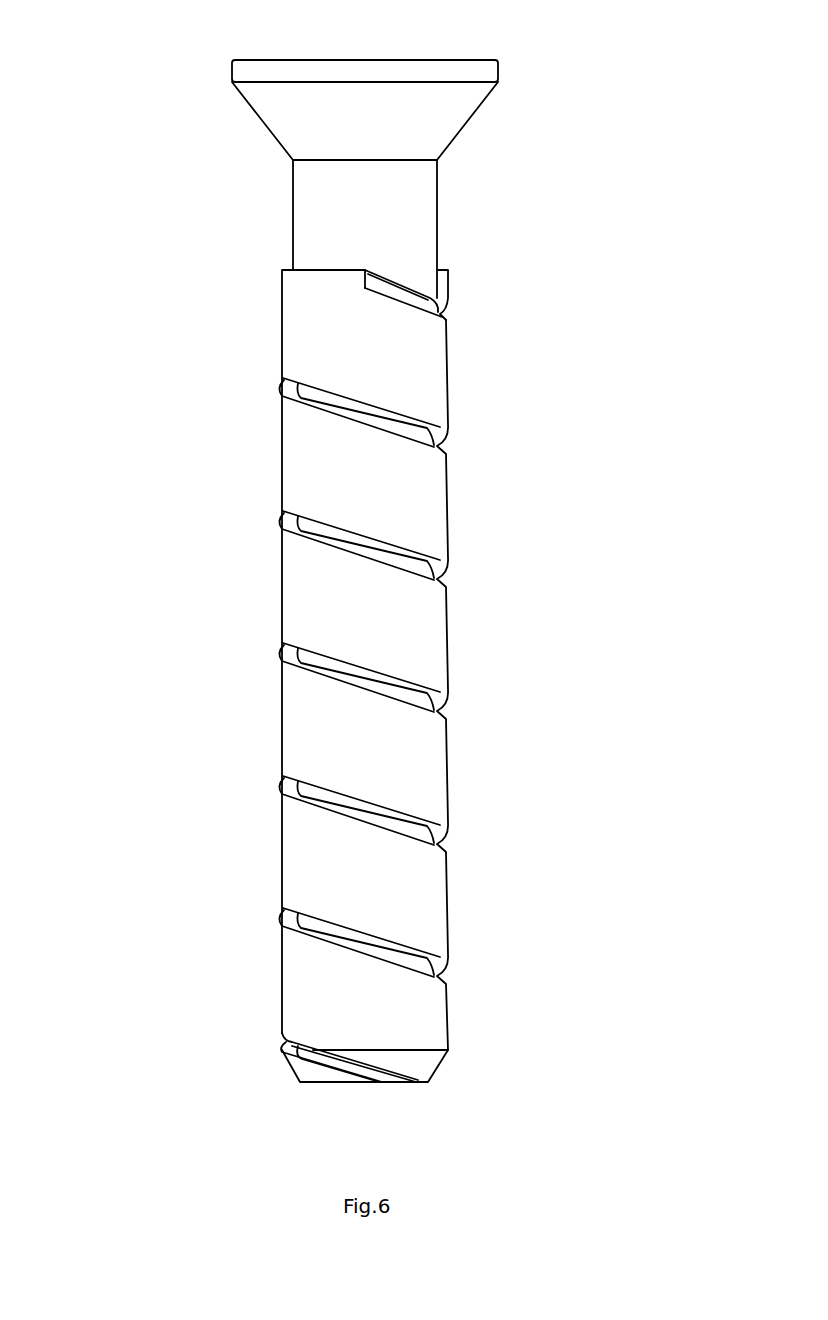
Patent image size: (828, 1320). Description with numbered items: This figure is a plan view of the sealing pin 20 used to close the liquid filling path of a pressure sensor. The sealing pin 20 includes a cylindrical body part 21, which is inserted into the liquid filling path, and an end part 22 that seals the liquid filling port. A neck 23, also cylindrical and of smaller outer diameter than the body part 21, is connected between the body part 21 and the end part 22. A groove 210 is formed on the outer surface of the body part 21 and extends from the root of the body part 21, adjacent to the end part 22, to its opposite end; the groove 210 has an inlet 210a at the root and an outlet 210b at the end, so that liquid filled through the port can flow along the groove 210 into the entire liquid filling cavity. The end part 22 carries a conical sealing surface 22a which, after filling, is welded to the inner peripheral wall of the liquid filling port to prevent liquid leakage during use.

The sealing pin 20 is at (197, 840).
The body part 21 is at (433, 633).
The end part 22 is at (498, 72).
The conical sealing surface 22a is at (470, 122).
The neck 23 is at (300, 219).
The groove 210 is at (348, 538).
The inlet 210a is at (450, 310).
The outlet 210b is at (368, 1075).